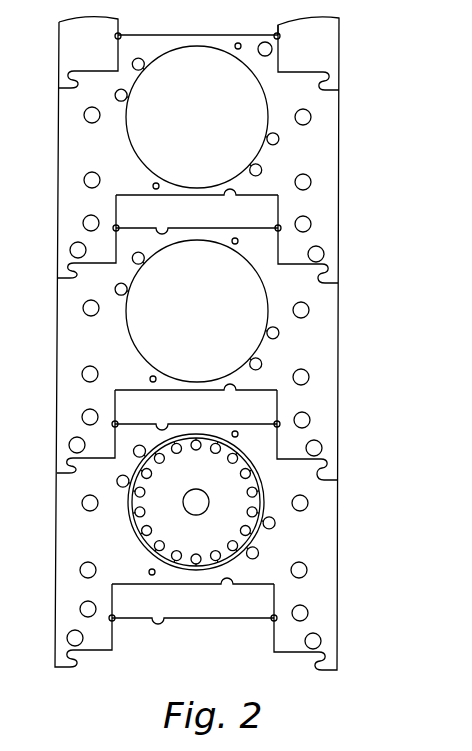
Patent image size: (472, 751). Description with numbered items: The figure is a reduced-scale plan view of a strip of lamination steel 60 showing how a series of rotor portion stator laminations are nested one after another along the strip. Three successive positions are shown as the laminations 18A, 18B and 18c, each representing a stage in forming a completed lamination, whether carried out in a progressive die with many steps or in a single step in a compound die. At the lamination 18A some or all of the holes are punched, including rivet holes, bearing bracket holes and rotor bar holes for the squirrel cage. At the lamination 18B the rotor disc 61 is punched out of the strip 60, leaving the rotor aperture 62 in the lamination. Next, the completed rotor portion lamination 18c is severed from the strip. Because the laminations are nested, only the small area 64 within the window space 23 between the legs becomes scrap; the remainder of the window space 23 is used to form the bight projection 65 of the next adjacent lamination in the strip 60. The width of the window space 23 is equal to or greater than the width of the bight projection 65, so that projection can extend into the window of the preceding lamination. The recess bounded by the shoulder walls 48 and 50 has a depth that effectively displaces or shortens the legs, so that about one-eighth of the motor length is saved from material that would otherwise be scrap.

The shoulder wall 48 is at (90, 70).
The shoulder wall 50 is at (308, 72).
The strip of lamination material 60 is at (339, 74).
The completed rotor portion lamination 18c is at (339, 138).
The window space 23 is at (120, 197).
The scrap area 64 is at (258, 207).
The bight projection 65 is at (278, 228).
The rotor aperture 62 is at (255, 283).
The rotor portion lamination 18B is at (338, 373).
The rotor disc 61 is at (252, 500).
The rotor portion lamination 18A is at (337, 553).